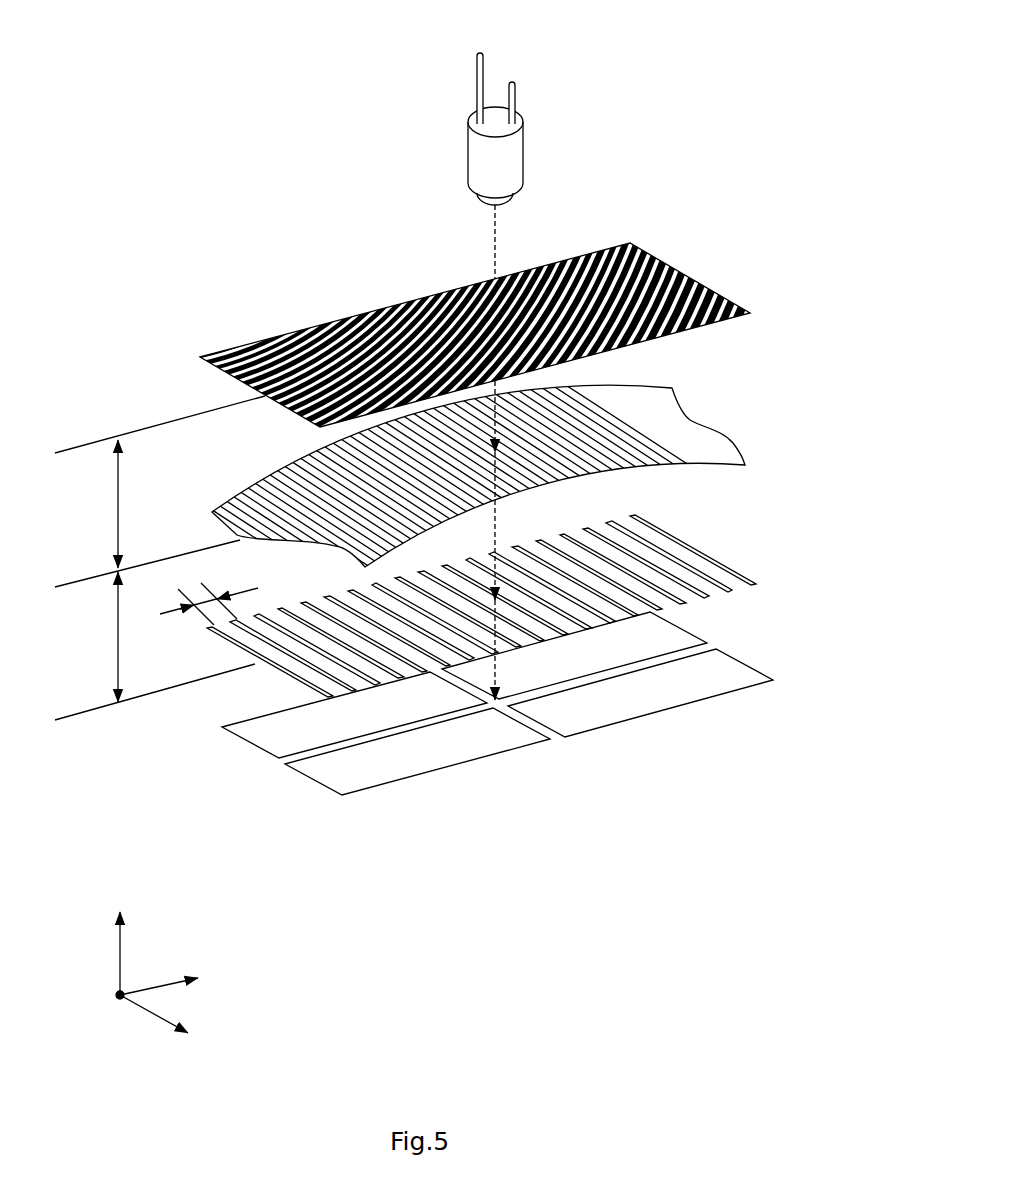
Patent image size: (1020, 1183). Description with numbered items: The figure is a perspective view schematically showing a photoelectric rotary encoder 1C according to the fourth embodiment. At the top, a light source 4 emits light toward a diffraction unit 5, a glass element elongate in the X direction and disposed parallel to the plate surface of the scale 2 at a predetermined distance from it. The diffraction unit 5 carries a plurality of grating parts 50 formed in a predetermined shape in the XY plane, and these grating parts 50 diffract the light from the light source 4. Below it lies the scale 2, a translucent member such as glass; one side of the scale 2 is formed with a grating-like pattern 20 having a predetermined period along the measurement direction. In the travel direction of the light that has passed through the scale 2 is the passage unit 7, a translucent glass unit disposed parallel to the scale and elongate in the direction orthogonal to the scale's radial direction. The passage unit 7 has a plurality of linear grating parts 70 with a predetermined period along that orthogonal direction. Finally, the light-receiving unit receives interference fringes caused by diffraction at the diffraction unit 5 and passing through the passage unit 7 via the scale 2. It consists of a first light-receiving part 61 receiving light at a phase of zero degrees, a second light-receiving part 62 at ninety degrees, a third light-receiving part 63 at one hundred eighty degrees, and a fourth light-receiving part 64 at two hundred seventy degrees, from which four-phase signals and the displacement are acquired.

The photoelectric rotary encoder 1C is at (775, 110).
The light source 4 is at (470, 157).
The diffraction unit 5 is at (714, 266).
The grating parts 50 is at (292, 330).
The scale 2 is at (758, 416).
The grating-like pattern 20 is at (640, 470).
The passage unit 7 is at (758, 566).
The grating parts 70 is at (660, 590).
The first light-receiving part 61 is at (243, 740).
The second light-receiving part 62 is at (665, 618).
The third light-receiving part 63 is at (447, 770).
The fourth light-receiving part 64 is at (663, 712).